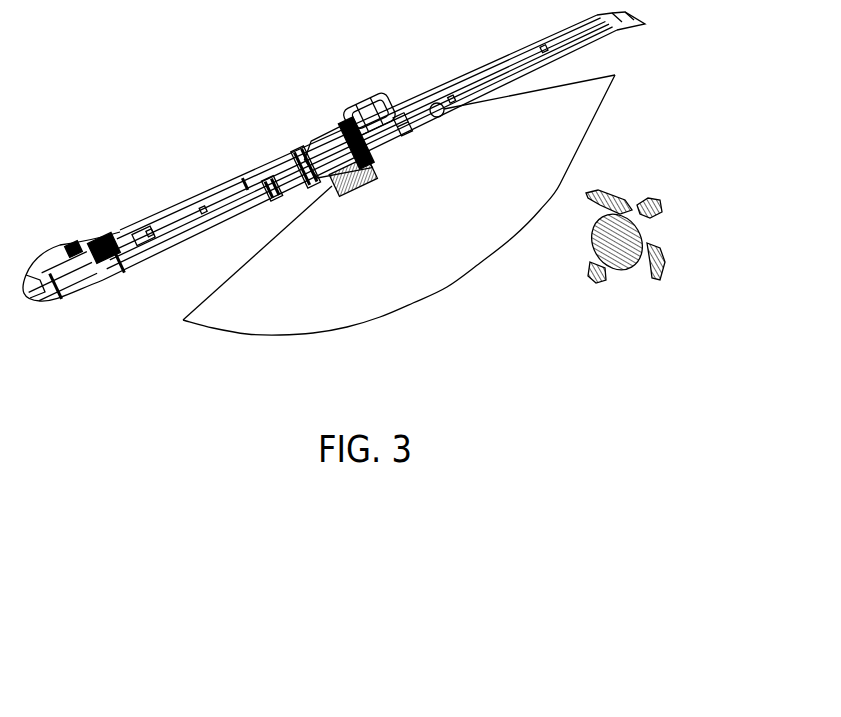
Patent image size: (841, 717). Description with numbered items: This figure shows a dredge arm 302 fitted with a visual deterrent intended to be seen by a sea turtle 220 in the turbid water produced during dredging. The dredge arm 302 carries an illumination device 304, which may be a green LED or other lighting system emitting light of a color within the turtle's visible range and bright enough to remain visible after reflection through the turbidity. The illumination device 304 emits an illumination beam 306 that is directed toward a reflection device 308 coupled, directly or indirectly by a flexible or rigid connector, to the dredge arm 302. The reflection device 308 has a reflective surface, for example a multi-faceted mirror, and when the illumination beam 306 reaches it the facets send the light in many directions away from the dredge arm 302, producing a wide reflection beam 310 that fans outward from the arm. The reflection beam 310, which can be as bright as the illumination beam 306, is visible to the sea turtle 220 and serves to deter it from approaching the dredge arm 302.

The dredge arm 302 is at (150, 111).
The illumination device 304 is at (441, 103).
The illumination beam 306 is at (414, 110).
The reflection device 308 is at (397, 110).
The reflection beam 310 is at (582, 120).
The sea turtle 220 is at (633, 230).